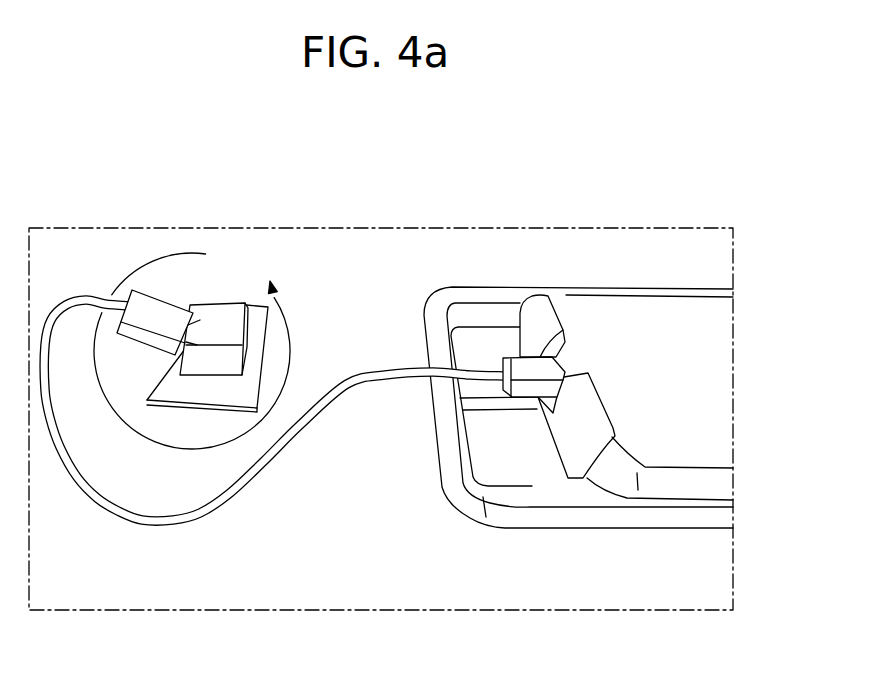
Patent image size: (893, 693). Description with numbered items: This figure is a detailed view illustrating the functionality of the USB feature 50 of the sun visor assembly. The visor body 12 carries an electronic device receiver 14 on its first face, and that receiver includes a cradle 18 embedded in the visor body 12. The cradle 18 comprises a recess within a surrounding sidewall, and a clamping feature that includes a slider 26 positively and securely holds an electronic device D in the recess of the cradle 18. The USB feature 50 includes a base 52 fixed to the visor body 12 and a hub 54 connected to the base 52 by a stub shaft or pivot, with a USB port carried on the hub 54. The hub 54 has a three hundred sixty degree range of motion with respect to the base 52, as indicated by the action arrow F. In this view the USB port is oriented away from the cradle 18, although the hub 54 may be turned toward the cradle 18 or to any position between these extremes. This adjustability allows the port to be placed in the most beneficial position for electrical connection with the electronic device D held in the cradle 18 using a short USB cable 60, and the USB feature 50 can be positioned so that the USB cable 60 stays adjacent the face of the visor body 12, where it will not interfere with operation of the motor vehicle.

The visor body 12 is at (200, 570).
The electronic device receiver 14 is at (604, 476).
The cradle 18 is at (577, 508).
The slider 26 is at (572, 423).
The USB feature 50 is at (242, 312).
The base 52 is at (252, 360).
The hub 54 is at (223, 315).
The USB cable 60 is at (238, 485).
The electronic device D is at (684, 373).
The action arrow F is at (159, 448).